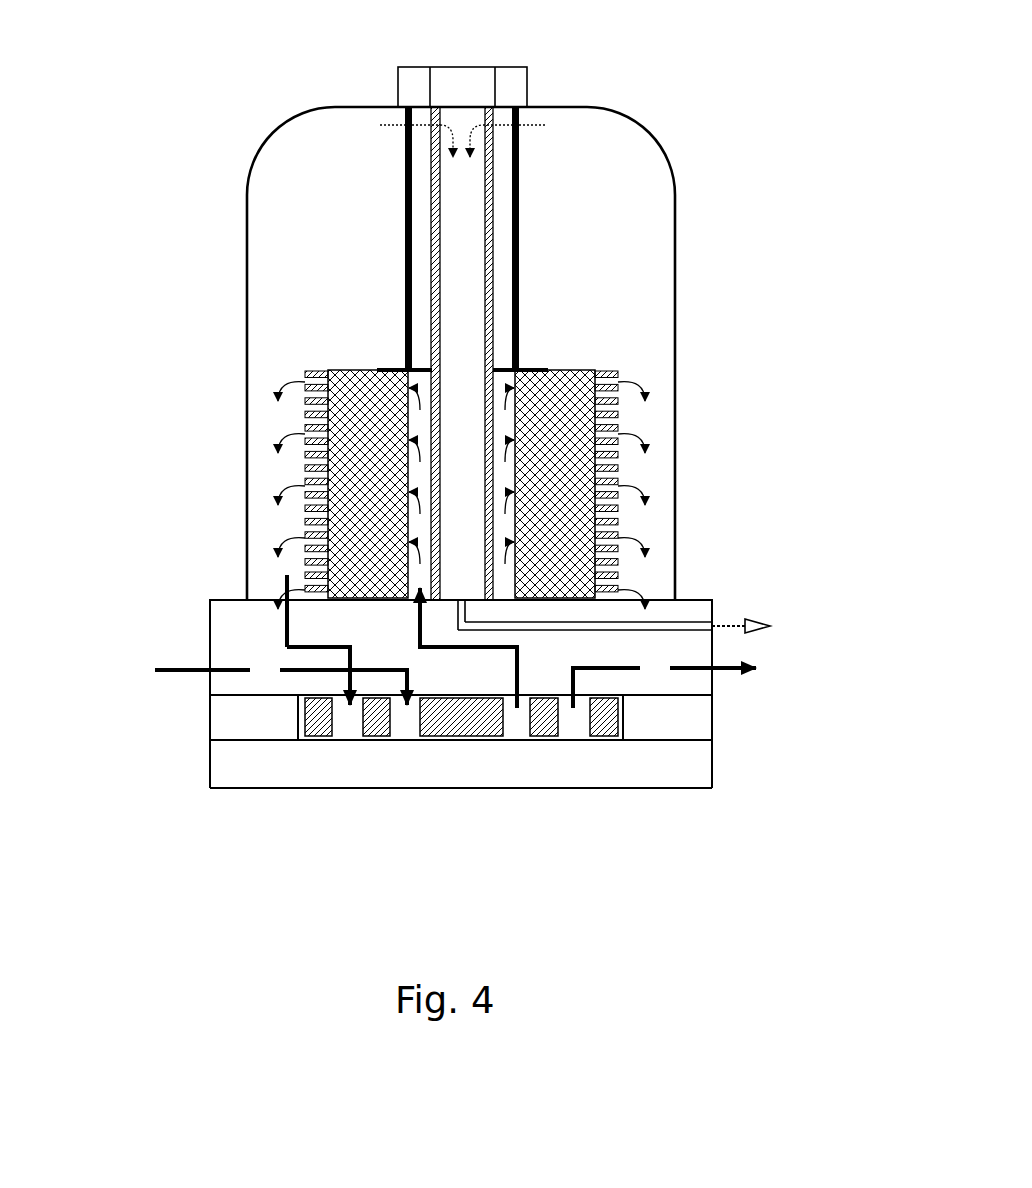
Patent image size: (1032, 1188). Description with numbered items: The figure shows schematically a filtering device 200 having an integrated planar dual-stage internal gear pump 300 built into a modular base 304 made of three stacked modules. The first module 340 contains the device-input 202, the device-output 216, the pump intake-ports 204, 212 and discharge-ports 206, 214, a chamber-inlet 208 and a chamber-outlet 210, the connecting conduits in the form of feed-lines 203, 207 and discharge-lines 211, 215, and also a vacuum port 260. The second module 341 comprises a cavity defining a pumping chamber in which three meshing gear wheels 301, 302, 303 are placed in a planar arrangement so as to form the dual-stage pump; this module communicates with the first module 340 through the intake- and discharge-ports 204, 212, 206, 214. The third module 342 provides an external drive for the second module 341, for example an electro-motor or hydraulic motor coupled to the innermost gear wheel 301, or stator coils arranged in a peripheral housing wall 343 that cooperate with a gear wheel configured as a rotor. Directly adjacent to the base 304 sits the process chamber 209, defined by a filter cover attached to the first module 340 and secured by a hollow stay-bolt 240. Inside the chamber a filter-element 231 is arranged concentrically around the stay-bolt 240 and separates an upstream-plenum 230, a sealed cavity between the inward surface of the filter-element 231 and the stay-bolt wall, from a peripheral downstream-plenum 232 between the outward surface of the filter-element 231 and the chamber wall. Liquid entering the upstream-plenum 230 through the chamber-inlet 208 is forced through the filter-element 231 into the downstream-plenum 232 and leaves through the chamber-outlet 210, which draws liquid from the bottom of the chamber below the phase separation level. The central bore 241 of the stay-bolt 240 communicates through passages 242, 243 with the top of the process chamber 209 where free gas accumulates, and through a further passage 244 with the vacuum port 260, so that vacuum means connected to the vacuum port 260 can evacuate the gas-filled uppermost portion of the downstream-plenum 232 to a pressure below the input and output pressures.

The filtering device 200 is at (182, 214).
The device-input 202 is at (210, 667).
The feed-line 203 is at (235, 668).
The intake-port 204 is at (407, 720).
The discharge-port 206 is at (517, 708).
The feed-line 207 is at (418, 618).
The chamber-inlet 208 is at (408, 597).
The process chamber 209 is at (677, 340).
The chamber-outlet 210 is at (285, 595).
The discharge-line 211 is at (283, 630).
The intake-port 212 is at (350, 720).
The discharge-port 214 is at (587, 697).
The discharge-line 215 is at (713, 673).
The device-output 216 is at (683, 670).
The upstream-plenum 230 is at (583, 371).
The filter-element 231 is at (502, 425).
The downstream-plenum 232 is at (657, 495).
The stay-bolt 240 is at (462, 88).
The central bore 241 is at (457, 268).
The passage 242 is at (495, 120).
The passage 243 is at (520, 117).
The passage 244 is at (461, 600).
The vacuum port 260 is at (713, 627).
The planar dual-stage internal gear pump 300 is at (443, 822).
The gear wheel 301 is at (473, 715).
The gear wheel 302 is at (378, 722).
The gear wheel 303 is at (320, 723).
The modular base 304 is at (673, 722).
The first module 340 is at (228, 682).
The second module 341 is at (228, 715).
The third module 342 is at (228, 760).
The peripheral housing wall 343 is at (298, 720).